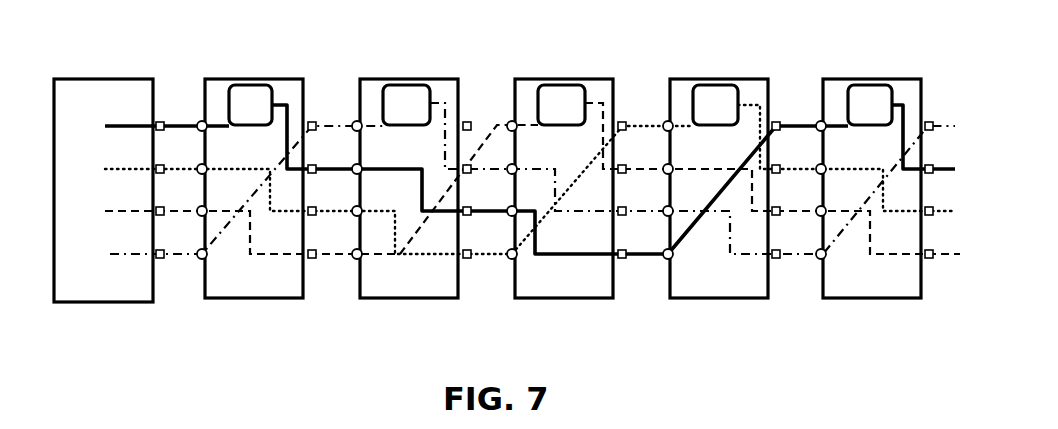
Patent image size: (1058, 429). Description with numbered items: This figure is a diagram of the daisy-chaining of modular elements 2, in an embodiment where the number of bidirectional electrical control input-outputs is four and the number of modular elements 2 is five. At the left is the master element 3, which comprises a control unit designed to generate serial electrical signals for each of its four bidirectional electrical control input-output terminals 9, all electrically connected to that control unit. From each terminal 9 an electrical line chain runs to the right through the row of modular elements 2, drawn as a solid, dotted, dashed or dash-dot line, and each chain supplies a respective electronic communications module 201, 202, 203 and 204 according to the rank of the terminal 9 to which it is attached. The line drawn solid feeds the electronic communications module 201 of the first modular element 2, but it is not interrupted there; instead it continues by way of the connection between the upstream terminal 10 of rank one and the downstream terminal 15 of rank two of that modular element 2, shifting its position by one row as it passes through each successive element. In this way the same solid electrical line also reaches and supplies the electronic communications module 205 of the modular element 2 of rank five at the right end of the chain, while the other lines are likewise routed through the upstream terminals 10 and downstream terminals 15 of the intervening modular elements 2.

The modular element 2 is at (257, 298).
The master element 3 is at (97, 72).
The bidirectional electrical control input-output terminal 9 is at (160, 121).
The upstream terminal 10 is at (201, 121).
The downstream terminal 15 is at (313, 120).
The electronic communications module 201 is at (244, 108).
The electronic communications module 202 is at (404, 100).
The electronic communications module 203 is at (560, 95).
The electronic communications module 204 is at (718, 100).
The electronic communications module 205 is at (866, 98).